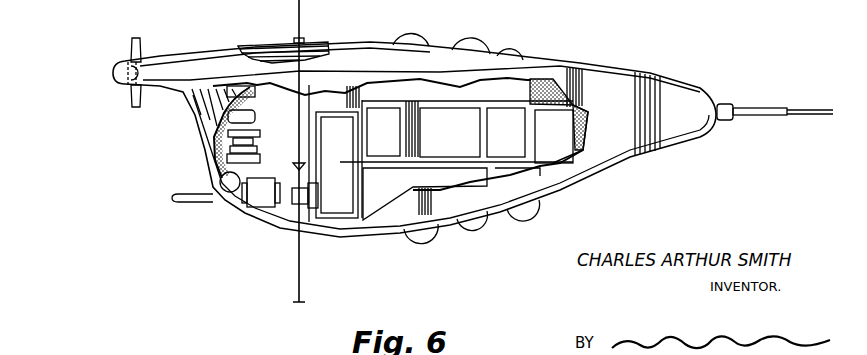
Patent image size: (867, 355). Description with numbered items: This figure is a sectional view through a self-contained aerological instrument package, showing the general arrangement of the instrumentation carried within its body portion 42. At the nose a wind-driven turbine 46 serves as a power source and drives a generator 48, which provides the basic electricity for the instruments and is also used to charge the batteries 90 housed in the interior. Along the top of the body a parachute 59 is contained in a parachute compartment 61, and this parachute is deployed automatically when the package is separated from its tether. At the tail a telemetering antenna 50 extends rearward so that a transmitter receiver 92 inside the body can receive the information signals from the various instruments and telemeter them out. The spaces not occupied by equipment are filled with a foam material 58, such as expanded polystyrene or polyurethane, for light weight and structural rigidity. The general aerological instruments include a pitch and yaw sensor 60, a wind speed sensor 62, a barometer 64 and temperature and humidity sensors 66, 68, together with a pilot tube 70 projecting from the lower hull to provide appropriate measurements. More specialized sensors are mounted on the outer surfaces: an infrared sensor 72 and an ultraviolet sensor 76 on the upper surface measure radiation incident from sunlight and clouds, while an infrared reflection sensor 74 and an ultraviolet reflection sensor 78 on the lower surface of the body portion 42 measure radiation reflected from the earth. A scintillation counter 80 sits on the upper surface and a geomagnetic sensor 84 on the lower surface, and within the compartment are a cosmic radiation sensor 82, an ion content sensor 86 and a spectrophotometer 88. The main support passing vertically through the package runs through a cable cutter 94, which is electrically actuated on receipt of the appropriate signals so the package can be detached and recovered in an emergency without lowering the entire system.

The body portion 42 is at (666, 81).
The wind-driven turbine 46 is at (132, 100).
The generator 48 is at (245, 92).
The telemetering antenna 50 is at (800, 111).
The foam material 58 is at (547, 80).
The parachute 59 is at (312, 40).
The pitch and yaw sensor 60 is at (255, 117).
The parachute compartment 61 is at (274, 38).
The wind speed sensor 62 is at (262, 148).
The barometer 64 is at (237, 190).
The temperature and humidity sensor 66 is at (230, 203).
The temperature and humidity sensor 68 is at (270, 201).
The pilot tube 70 is at (195, 201).
The infrared sensor 72 is at (407, 34).
The infrared reflection sensor 74 is at (416, 236).
The ultraviolet sensor 76 is at (465, 40).
The ultraviolet reflection sensor 78 is at (470, 226).
The scintillation counter 80 is at (512, 48).
The cosmic radiation sensor 82 is at (514, 136).
The geomagnetic sensor 84 is at (528, 208).
The ion content sensor 86 is at (393, 136).
The spectrophotometer 88 is at (462, 139).
The batteries 90 is at (348, 163).
The transmitter receiver 92 is at (398, 189).
The cable cutter 94 is at (297, 163).